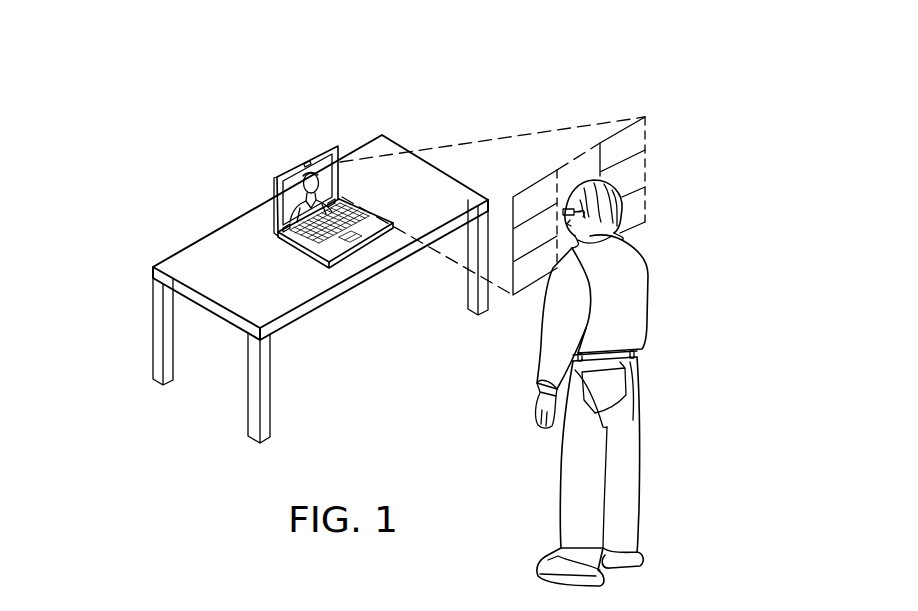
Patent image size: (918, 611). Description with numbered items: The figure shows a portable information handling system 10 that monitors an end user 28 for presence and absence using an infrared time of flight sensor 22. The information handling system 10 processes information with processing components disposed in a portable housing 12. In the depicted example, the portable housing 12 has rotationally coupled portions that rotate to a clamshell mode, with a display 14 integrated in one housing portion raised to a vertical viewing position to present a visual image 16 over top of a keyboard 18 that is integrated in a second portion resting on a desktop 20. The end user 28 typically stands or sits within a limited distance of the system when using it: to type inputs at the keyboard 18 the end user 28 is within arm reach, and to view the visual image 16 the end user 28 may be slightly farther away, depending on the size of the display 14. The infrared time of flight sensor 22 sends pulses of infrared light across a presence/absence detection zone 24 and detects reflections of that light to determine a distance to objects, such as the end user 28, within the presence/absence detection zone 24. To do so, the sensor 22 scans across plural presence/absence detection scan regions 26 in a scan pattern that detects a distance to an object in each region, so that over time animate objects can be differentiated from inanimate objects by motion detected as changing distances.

The portable information handling system 10 is at (272, 253).
The portable housing 12 is at (308, 266).
The display 14 is at (328, 172).
The visual image 16 is at (292, 182).
The keyboard 18 is at (322, 242).
The desktop 20 is at (172, 265).
The infrared time of flight (IRTOF) sensor 22 is at (307, 164).
The presence/absence detection zone 24 is at (586, 209).
The presence/absence detection scan regions 26 is at (719, 240).
The end user 28 is at (633, 428).